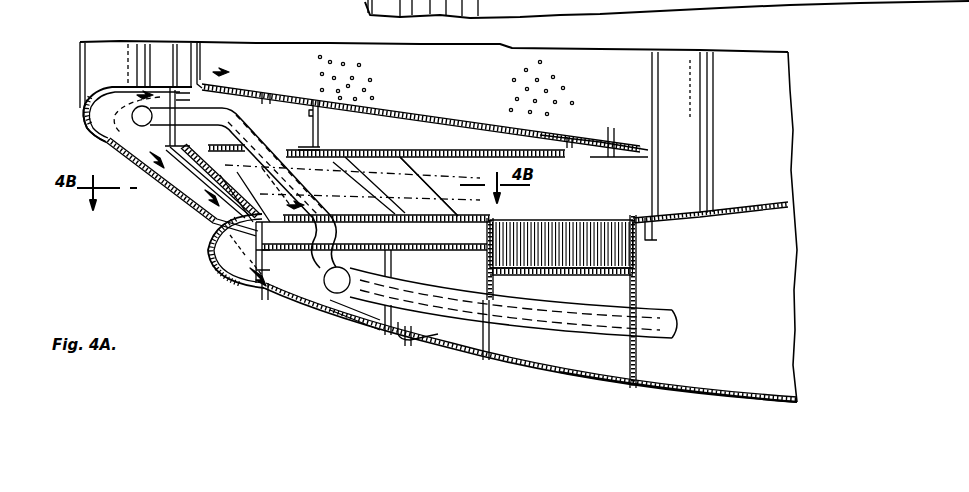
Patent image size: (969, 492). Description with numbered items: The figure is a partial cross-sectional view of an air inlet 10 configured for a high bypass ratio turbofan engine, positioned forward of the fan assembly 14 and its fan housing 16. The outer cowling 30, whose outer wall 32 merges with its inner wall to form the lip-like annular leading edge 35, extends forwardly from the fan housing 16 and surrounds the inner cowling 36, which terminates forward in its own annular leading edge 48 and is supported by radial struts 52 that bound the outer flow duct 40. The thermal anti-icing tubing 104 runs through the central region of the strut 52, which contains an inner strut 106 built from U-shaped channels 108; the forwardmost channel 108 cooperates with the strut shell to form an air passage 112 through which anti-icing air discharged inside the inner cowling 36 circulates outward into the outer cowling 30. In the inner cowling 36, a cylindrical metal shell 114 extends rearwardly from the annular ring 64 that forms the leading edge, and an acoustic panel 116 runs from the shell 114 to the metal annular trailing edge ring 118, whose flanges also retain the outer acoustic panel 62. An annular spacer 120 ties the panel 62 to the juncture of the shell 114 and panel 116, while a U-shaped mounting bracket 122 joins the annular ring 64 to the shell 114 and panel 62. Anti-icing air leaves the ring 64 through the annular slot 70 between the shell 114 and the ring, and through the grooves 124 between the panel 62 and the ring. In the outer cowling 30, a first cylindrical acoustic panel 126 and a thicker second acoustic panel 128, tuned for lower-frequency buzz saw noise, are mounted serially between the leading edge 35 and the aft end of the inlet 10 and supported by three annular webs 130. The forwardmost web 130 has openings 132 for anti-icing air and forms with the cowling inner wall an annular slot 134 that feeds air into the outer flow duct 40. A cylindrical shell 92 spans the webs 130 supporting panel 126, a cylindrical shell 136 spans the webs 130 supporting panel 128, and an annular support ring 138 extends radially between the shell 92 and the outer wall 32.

The air inlet 10 is at (95, 32).
The fan assembly 14 is at (678, 80).
The fan housing 16 is at (686, 392).
The outer cowling 30 is at (312, 316).
The outer wall 32 is at (358, 330).
The annular leading edge 35 is at (208, 252).
The inner cowling 36 is at (83, 140).
The outer flow duct 40 is at (573, 145).
The annular leading edge 48 is at (80, 118).
The strut 52 is at (205, 226).
The acoustic panel 62 is at (400, 153).
The annular ring 64 is at (100, 88).
The annular slot 70 is at (196, 42).
The cylindrical shell 92 is at (455, 251).
The thermal anti-icing tubing 104 is at (400, 316).
The inner strut 106 is at (570, 3).
The U-shaped channel 108 is at (215, 235).
The air passage 112 is at (152, 180).
The cylindrical metal shell 114 is at (268, 94).
The acoustic panel 116 is at (423, 110).
The annular trailing edge ring 118 is at (612, 150).
The annular spacer 120 is at (320, 128).
The mounting bracket 122 is at (192, 100).
The slot or series of grooves 124 is at (190, 209).
The first cylindrical acoustic panel 126 is at (432, 216).
The second cylindrical acoustic panel 128 is at (560, 230).
The annular web 130 is at (497, 292).
The openings 132 is at (247, 290).
The annular slot 134 is at (276, 207).
The cylindrical shell 136 is at (570, 276).
The annular support ring 138 is at (393, 266).